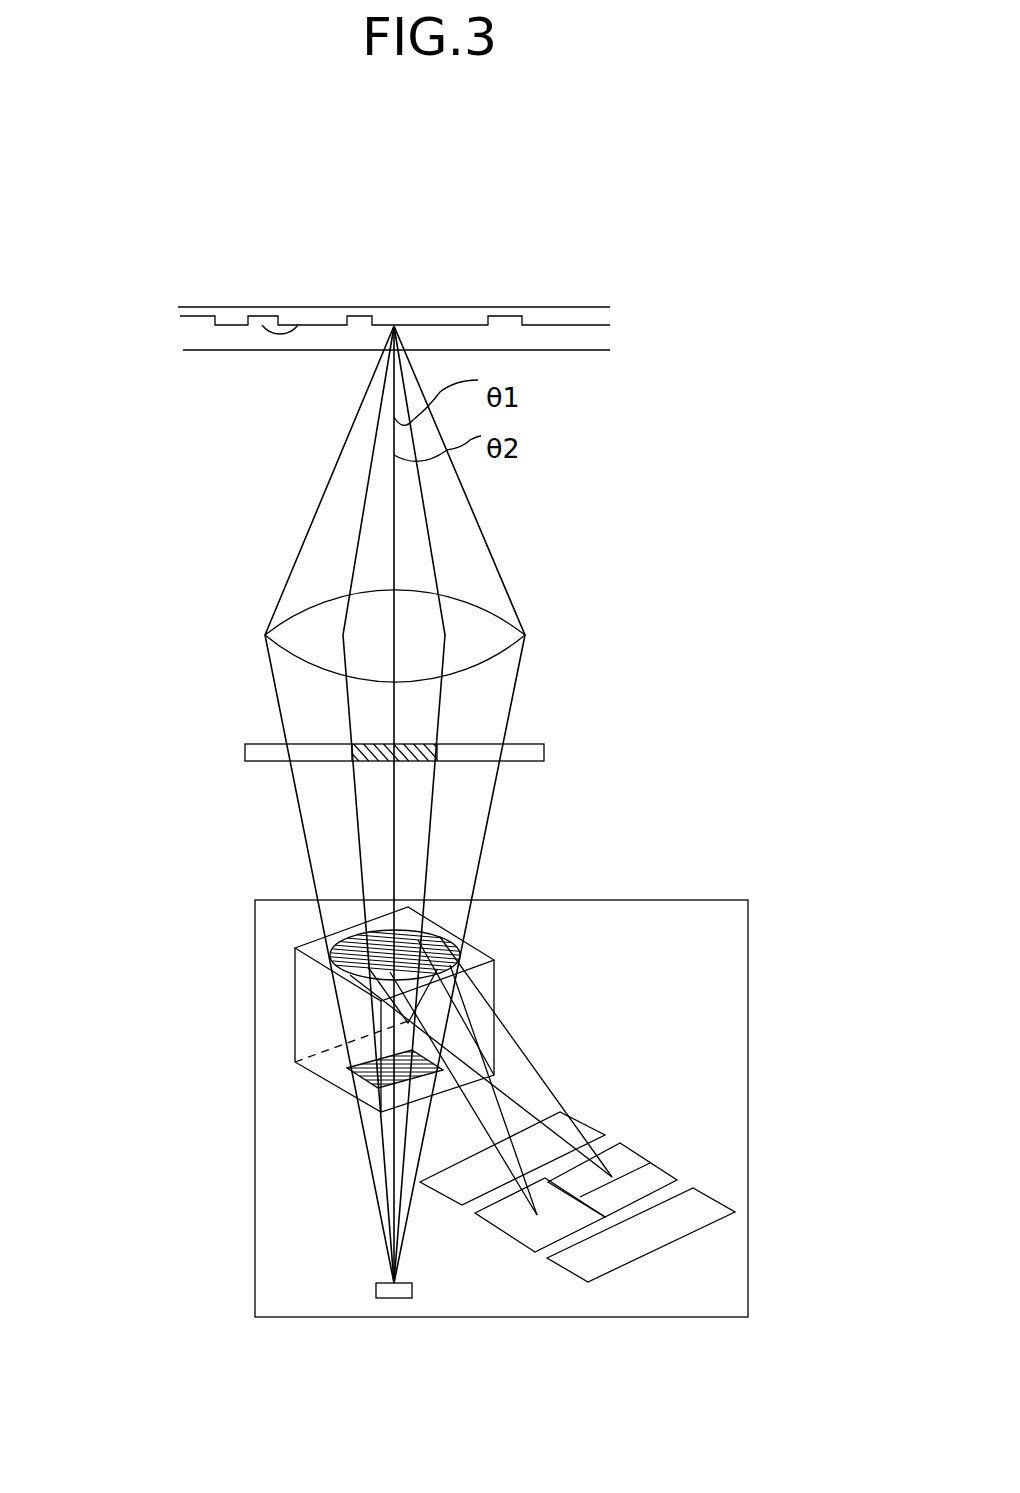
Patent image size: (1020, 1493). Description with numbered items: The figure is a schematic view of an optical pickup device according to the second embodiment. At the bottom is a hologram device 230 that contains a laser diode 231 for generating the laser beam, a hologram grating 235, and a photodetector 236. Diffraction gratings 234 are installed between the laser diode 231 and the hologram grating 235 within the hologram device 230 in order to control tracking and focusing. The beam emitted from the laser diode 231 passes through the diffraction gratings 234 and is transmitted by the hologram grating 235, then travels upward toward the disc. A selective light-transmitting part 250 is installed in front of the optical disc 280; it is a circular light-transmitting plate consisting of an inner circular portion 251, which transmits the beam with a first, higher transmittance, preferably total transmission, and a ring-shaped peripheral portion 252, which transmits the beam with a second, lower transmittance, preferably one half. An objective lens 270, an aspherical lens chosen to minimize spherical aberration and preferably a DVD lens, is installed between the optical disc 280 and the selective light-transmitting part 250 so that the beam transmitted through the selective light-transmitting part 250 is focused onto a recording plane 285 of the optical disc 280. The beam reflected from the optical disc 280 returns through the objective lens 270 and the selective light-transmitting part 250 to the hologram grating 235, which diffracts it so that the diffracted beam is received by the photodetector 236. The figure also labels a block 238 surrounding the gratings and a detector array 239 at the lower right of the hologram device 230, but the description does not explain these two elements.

The hologram device 230 is at (748, 1072).
The laser diode 231 is at (375, 1296).
The diffraction gratings 234 is at (347, 1076).
The hologram grating 235 is at (345, 937).
The photodetector 236 is at (523, 950).
The housing block 238 is at (320, 1003).
The photodetector array 239 is at (595, 1108).
The selective light-transmitting part 250 is at (588, 733).
The inner circular portion 251 is at (378, 744).
The peripheral portion 252 is at (262, 748).
The objective lens 270 is at (310, 628).
The optical disc 280 is at (200, 331).
The recording plane 285 is at (299, 326).